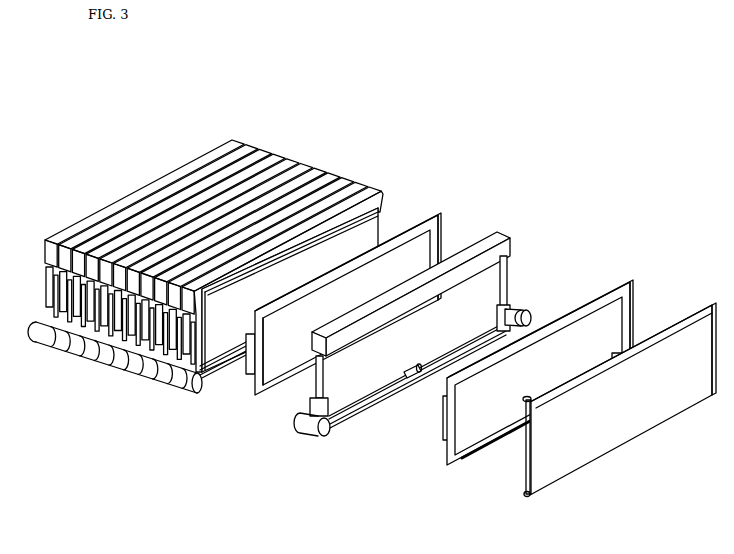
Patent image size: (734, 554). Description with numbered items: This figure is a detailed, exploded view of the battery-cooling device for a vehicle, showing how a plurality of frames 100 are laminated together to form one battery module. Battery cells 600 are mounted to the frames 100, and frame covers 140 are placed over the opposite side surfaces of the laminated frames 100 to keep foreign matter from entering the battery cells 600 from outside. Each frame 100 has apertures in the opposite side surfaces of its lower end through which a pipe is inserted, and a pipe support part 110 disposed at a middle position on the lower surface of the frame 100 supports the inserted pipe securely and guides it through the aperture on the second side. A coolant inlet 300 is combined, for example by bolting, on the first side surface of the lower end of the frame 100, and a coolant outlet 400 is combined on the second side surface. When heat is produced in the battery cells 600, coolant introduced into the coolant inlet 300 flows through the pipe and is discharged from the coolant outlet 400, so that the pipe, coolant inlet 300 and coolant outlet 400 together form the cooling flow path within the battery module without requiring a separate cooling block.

The frame 100 is at (312, 398).
The pipe support part 110 is at (416, 380).
The frame cover 140 is at (627, 428).
The coolant inlet 300 is at (182, 393).
The coolant outlet 400 is at (516, 305).
The battery cell 600 is at (423, 240).